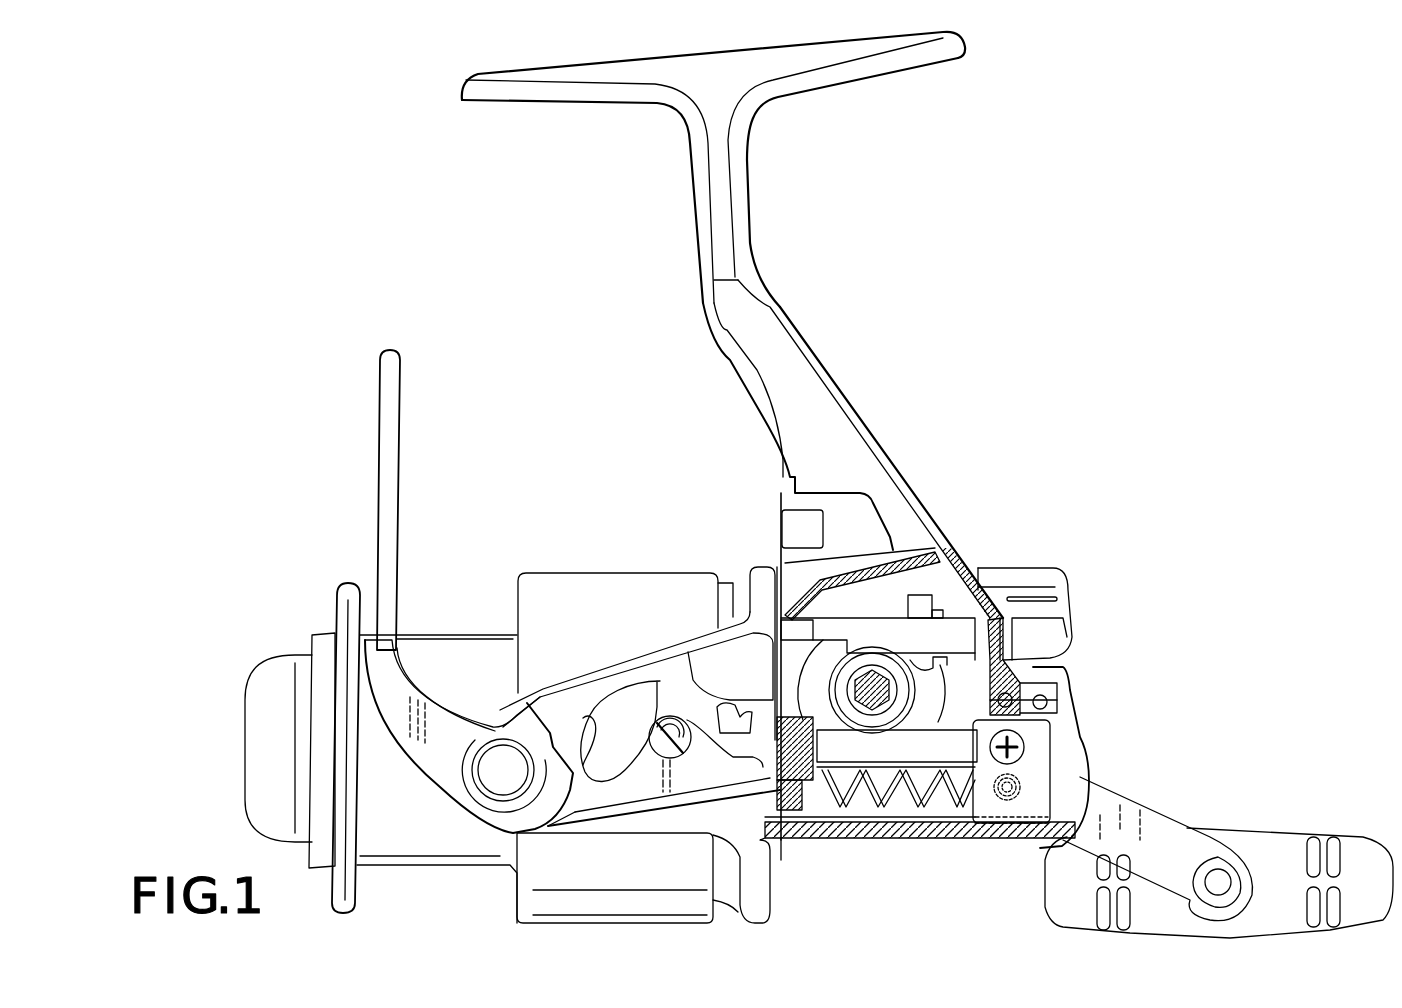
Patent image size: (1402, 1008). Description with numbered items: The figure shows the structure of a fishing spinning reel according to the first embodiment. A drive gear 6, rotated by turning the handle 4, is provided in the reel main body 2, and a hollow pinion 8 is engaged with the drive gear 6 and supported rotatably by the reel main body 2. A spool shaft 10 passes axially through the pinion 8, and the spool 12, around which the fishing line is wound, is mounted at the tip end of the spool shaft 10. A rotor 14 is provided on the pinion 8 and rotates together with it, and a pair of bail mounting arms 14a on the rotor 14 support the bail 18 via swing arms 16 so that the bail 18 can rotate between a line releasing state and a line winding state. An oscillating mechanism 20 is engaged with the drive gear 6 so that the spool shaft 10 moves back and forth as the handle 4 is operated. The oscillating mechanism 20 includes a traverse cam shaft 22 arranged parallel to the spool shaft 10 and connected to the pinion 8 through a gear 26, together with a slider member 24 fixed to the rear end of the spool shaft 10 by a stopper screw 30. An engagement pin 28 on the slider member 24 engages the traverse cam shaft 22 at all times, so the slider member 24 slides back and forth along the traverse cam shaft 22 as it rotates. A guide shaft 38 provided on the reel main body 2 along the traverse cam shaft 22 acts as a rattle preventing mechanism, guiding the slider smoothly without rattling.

The reel main body 2 is at (950, 531).
The handle 4 is at (1273, 830).
The drive gear 6 is at (797, 680).
The pinion 8 is at (750, 747).
The spool shaft 10 is at (947, 753).
The spool 12 is at (460, 630).
The rotor 14 is at (763, 560).
The bail mounting arms 14a is at (633, 662).
The swing arms 16 is at (430, 795).
The bail 18 is at (399, 398).
The oscillating mechanism 20 is at (913, 850).
The traverse cam shaft 22 is at (843, 807).
The slider member 24 is at (980, 723).
The gear 26 is at (713, 828).
The engagement pin 28 is at (1007, 837).
The stopper screw 30 is at (1032, 742).
The guide shaft 38 is at (870, 803).